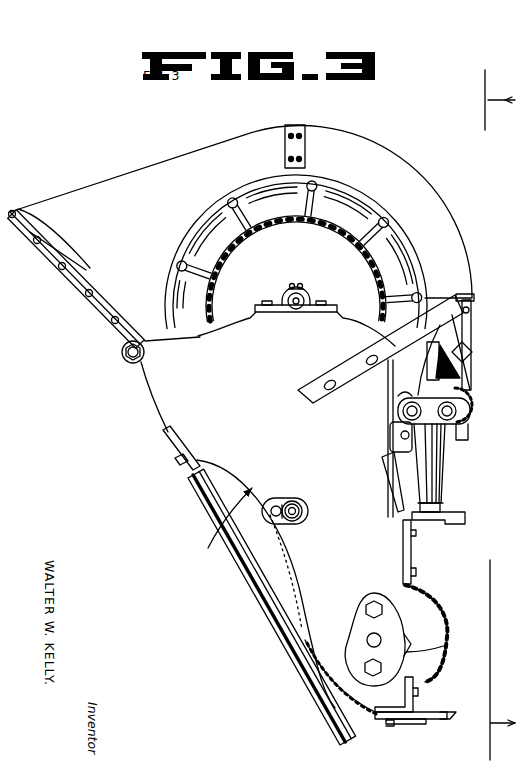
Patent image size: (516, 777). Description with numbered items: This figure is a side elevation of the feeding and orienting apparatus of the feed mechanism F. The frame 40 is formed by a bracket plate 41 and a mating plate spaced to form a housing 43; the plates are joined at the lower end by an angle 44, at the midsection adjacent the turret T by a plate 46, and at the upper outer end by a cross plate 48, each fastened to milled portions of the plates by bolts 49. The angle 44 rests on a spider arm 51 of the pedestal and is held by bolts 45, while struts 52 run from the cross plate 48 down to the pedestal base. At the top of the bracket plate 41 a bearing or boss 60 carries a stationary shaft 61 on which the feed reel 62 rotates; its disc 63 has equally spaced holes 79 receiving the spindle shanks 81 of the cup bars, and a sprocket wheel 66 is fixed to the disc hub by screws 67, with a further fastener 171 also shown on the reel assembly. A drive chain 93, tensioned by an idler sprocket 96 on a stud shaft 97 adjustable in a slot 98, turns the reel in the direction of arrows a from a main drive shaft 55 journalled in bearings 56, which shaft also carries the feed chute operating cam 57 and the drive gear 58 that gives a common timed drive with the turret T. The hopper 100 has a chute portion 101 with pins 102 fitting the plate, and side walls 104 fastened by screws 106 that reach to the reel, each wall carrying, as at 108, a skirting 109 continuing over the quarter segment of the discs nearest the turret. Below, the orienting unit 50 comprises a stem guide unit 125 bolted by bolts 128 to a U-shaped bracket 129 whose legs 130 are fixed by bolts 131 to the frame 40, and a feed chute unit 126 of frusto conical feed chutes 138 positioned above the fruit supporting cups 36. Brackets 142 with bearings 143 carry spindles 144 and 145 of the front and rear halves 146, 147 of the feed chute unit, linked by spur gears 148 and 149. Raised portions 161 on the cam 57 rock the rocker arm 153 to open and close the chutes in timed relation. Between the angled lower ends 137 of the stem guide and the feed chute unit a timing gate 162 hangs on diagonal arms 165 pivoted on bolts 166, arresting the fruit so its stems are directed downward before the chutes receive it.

The hopper 100 is at (84, 186).
The side walls 104 is at (90, 228).
The chute portion 101 is at (66, 282).
The screws 106 is at (116, 318).
The pins 102 is at (121, 357).
The feed mechanism F is at (154, 399).
The cross plate 48 is at (165, 434).
The bolts 49 is at (177, 461).
The frame 40 is at (232, 557).
The housing 43 is at (270, 572).
The struts 52 is at (268, 612).
The bracket plate 41 is at (266, 425).
The slots 98 is at (276, 505).
The idler sprockets 96 is at (290, 500).
The stud shafts 97 is at (308, 509).
The drive chain 93 is at (348, 236).
The sprocket wheel 66 is at (270, 243).
The feed reel 62 is at (242, 186).
The disc 63 is at (172, 246).
The spindle shanks 81 is at (227, 201).
The holes 79 is at (176, 266).
The skirting attachment 108 is at (300, 152).
The arrows a is at (280, 202).
The bearing or boss 60 is at (276, 313).
The stationary shaft 61 is at (297, 313).
The screws 67 is at (304, 286).
The skirting 109 is at (445, 232).
The U-shaped bracket 129 is at (466, 297).
The bolts 128 is at (470, 309).
The stem guide unit 125 is at (471, 325).
The bolts 166 is at (468, 345).
The arms 165 is at (462, 362).
The lower ends 137 is at (465, 378).
The spur gear 148 is at (466, 392).
The spindle 144 is at (460, 406).
The orienting unit 50 is at (466, 422).
The bearings 143 is at (462, 428).
The rocker arm 153 is at (396, 470).
The feed chute unit 126 is at (452, 468).
The rear half 147 is at (445, 482).
The front half 146 is at (445, 494).
The fruit supporting cups 36 is at (466, 514).
The turret T is at (450, 525).
The legs 130 is at (412, 343).
The bolts 131 is at (364, 357).
The timing gate 162 is at (424, 363).
The spur gear 149 is at (400, 397).
The brackets 142 is at (398, 408).
The spindle 145 is at (402, 414).
The pin 171 is at (432, 405).
The feed chutes 138 is at (412, 451).
The plate 46 is at (411, 560).
The bearings 56 is at (356, 628).
The feed chute operating cam 57 is at (410, 650).
The main drive shaft 55 is at (367, 643).
The drive gear 58 is at (447, 640).
The raised portions 161 is at (447, 648).
The angle 44 is at (413, 705).
The spider arm 51 is at (436, 721).
The bolts 45 is at (394, 726).